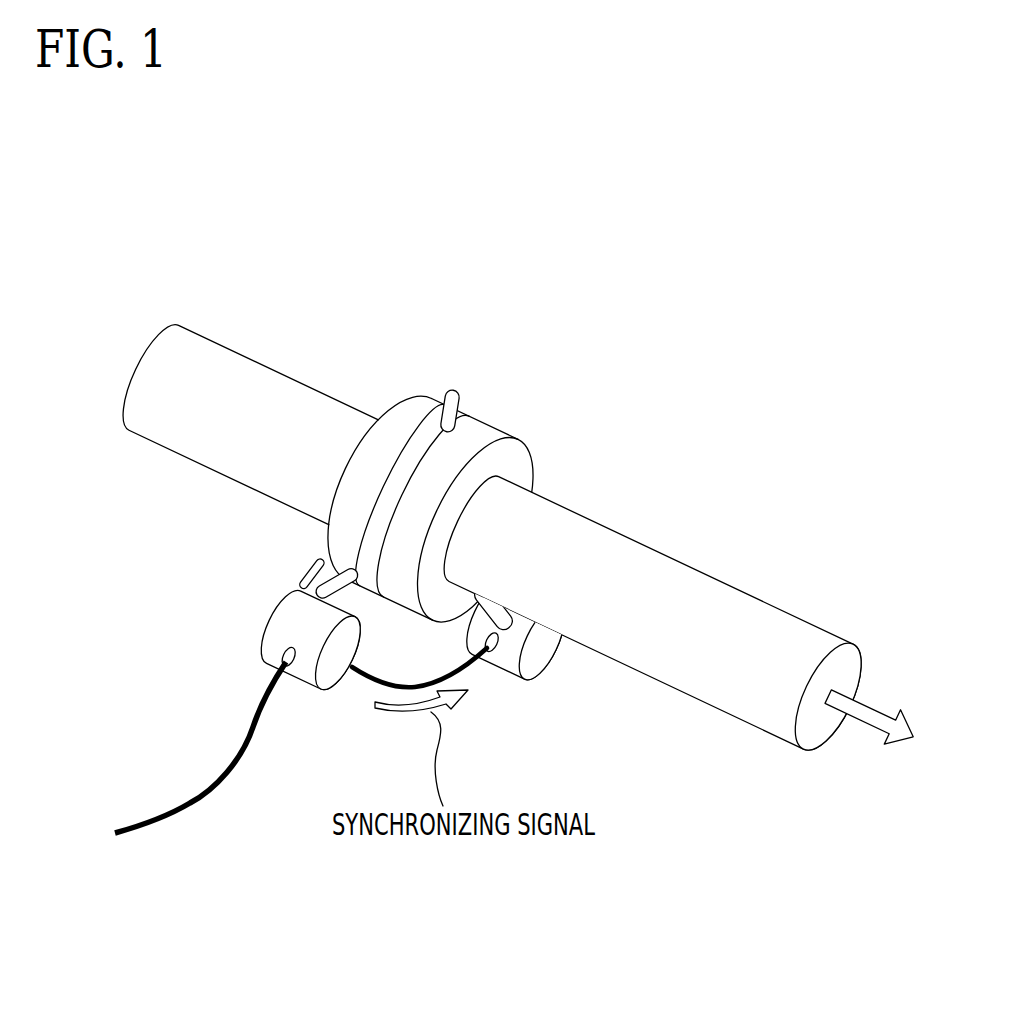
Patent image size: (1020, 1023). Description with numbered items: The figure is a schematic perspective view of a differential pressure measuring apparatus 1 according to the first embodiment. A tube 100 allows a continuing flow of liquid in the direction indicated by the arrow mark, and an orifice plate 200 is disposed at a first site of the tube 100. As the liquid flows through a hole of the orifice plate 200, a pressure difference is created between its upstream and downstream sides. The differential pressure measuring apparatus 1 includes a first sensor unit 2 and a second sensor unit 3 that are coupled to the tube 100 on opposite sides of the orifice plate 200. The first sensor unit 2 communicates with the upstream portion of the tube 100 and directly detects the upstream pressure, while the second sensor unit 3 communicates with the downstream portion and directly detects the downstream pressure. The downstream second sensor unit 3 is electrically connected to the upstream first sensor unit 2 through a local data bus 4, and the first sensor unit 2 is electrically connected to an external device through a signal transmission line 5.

The differential pressure measuring apparatus 1 is at (329, 731).
The first sensor unit 2 is at (276, 613).
The second sensor unit 3 is at (560, 669).
The local data bus 4 is at (358, 672).
The signal transmission line 5 is at (152, 830).
The tube 100 is at (290, 378).
The orifice plate 200 is at (459, 404).